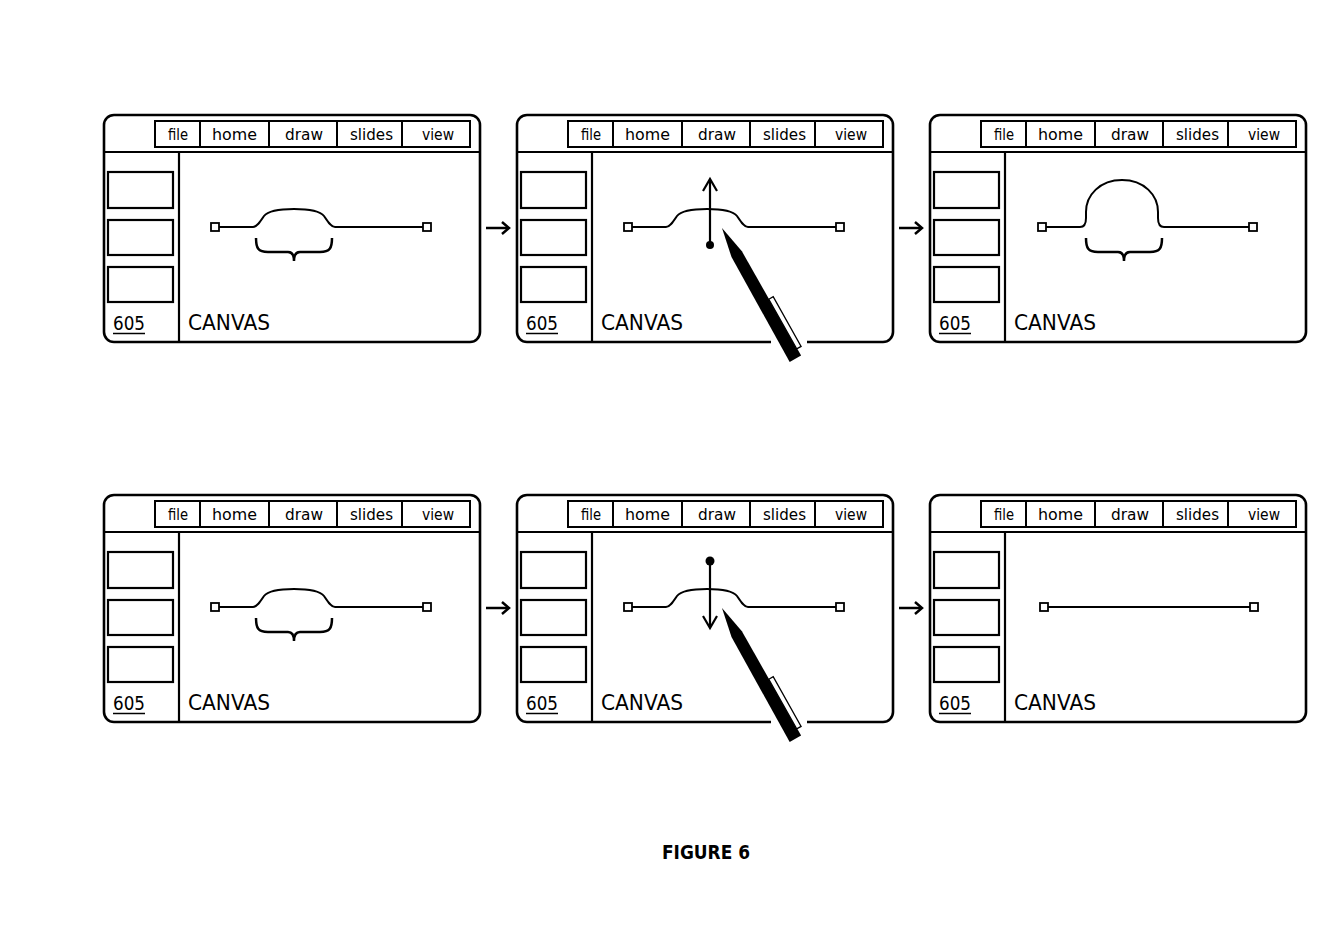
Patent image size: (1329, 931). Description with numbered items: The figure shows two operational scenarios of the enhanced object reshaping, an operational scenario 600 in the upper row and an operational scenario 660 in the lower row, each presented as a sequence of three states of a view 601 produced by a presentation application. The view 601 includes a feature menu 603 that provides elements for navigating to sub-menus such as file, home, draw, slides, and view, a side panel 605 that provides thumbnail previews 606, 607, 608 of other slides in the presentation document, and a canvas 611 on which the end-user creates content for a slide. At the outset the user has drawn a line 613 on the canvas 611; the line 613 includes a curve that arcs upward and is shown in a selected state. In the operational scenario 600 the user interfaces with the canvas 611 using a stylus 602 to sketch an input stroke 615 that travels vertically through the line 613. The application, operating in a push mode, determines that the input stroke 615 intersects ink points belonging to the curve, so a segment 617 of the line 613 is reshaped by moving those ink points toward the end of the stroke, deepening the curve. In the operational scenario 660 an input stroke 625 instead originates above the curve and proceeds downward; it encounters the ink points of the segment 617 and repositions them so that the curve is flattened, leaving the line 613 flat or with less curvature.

The operational scenario 600 is at (95, 67).
The operational scenario 660 is at (95, 447).
The view 601 is at (705, 432).
The stylus 602 is at (788, 313).
The feature menu 603 is at (704, 324).
The side panel 605 is at (705, 437).
The thumbnail preview 606 is at (553, 380).
The thumbnail preview 607 is at (553, 427).
The thumbnail preview 608 is at (553, 474).
The canvas 611 is at (658, 512).
The line 613 is at (734, 410).
The input stroke 615 is at (708, 255).
The segment 617 is at (709, 455).
The input stroke 625 is at (719, 568).